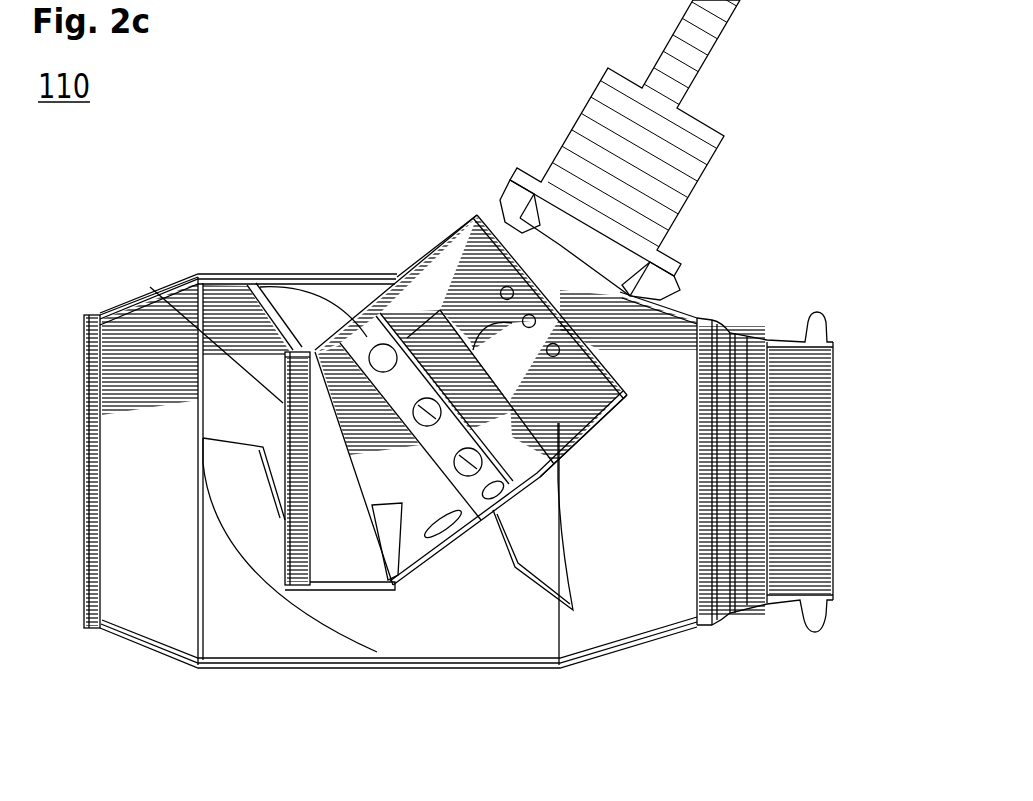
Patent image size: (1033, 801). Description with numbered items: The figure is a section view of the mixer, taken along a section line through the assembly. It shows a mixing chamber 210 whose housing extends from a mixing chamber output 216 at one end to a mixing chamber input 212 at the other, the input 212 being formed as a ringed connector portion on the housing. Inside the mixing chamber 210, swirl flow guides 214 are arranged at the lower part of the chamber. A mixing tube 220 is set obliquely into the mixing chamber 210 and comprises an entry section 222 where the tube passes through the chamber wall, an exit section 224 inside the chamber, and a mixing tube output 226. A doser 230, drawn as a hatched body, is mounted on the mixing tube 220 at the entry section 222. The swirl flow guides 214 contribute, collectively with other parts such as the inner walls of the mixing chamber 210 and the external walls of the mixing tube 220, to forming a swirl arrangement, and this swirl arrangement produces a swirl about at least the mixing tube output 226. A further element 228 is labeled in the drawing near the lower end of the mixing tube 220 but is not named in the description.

The mixing chamber 210 is at (402, 510).
The mixing chamber input 212 is at (783, 511).
The swirl flow guides 214 is at (388, 592).
The mixing chamber output 216 is at (107, 524).
The mixing tube 220 is at (471, 359).
The entry section 222 is at (388, 237).
The exit section 224 is at (273, 394).
The mixing tube output 226 is at (140, 275).
The cartridge lower edge 228 is at (586, 460).
The doser 230 is at (657, 154).